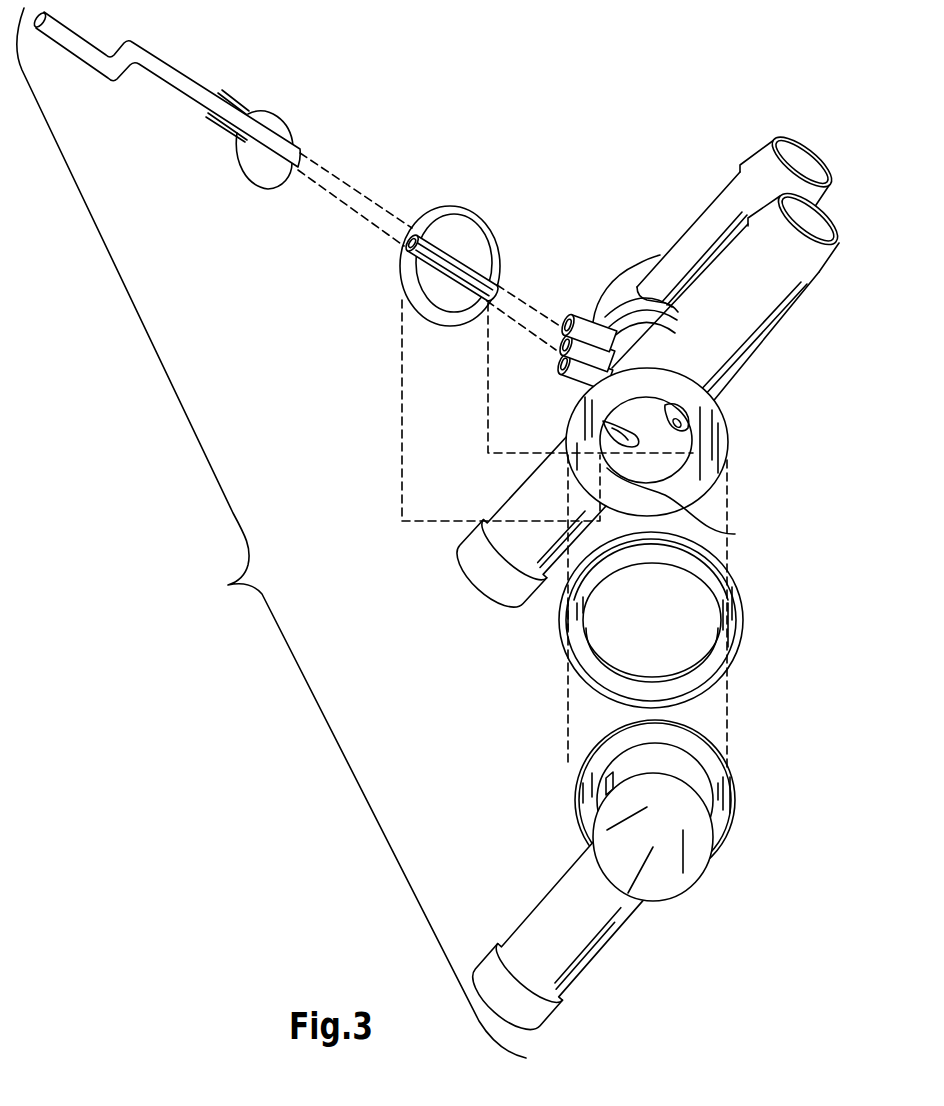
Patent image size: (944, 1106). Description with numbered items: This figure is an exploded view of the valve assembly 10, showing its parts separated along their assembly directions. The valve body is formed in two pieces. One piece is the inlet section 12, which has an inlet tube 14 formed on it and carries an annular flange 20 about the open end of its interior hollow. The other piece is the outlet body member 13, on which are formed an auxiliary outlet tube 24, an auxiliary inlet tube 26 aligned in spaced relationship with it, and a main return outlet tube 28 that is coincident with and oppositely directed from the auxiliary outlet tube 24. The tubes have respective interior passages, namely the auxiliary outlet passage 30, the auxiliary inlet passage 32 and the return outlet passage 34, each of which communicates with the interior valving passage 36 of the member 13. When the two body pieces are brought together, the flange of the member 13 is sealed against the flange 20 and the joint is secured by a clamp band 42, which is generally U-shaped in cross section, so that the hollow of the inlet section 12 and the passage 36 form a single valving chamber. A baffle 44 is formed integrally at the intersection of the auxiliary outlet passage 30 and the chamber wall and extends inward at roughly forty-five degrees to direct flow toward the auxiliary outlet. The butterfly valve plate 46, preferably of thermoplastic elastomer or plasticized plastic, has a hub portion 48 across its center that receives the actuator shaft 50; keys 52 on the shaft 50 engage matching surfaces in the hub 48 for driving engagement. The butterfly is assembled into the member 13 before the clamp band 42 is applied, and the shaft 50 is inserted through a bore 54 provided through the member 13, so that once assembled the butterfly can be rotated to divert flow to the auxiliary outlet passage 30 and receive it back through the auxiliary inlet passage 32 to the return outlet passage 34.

The valve assembly 10 is at (271, 533).
The inlet section 12 is at (697, 880).
The outlet body member 13 is at (637, 268).
The inlet tube 14 is at (547, 898).
The annular flange 20 is at (577, 780).
The auxiliary outlet tube 24 is at (755, 348).
The auxiliary inlet tube 26 is at (712, 203).
The main return outlet tube 28 is at (517, 494).
The auxiliary outlet passage 30 is at (817, 213).
The auxiliary inlet passage 32 is at (781, 140).
The return outlet passage 34 is at (603, 423).
The interior valving passage 36 is at (735, 534).
The clamp band 42 is at (560, 640).
The baffle 44 is at (668, 406).
The butterfly valve plate 46 is at (402, 283).
The hub portion 48 is at (455, 242).
The actuator shaft 50 is at (148, 46).
The keys 52 is at (268, 189).
The bore 54 is at (559, 350).